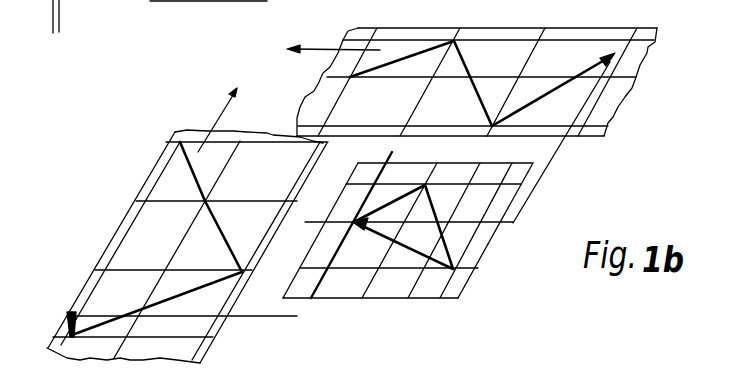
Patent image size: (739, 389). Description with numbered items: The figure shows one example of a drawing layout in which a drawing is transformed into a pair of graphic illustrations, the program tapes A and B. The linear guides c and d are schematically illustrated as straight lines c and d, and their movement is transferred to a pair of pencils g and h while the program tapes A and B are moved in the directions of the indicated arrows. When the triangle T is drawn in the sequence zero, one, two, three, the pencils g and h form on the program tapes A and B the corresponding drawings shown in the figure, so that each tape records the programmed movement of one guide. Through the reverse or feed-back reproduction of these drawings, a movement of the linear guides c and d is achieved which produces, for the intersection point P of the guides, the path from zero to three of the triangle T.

The program tape A is at (138, 242).
The program tape B is at (577, 58).
The triangle T is at (445, 238).
The intersection point P is at (364, 222).
The linear guide c is at (302, 306).
The linear guide d is at (513, 223).
The pencil g is at (66, 318).
The pencil h is at (618, 64).